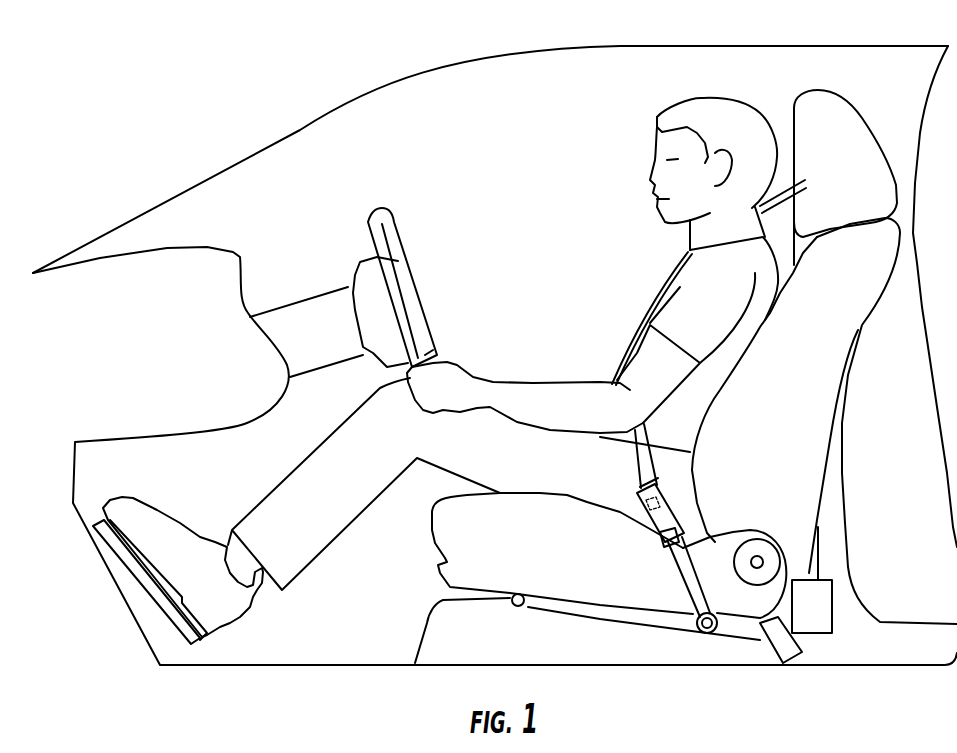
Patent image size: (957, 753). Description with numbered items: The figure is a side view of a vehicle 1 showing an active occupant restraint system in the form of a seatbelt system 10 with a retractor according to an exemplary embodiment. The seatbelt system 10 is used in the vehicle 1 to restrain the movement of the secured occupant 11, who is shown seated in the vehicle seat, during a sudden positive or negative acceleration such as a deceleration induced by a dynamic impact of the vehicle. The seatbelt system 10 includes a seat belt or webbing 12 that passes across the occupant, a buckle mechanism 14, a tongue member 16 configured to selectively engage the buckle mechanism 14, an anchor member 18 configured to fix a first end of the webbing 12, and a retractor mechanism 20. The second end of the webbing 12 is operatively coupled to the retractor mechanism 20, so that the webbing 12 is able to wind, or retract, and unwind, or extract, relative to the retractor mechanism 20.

The vehicle 1 is at (133, 124).
The seatbelt system 10 is at (617, 310).
The secured occupant 11 is at (570, 400).
The webbing 12 is at (813, 570).
The buckle mechanism 14 is at (650, 538).
The tongue member 16 is at (633, 486).
The anchor member 18 is at (786, 652).
The retractor mechanism 20 is at (820, 617).